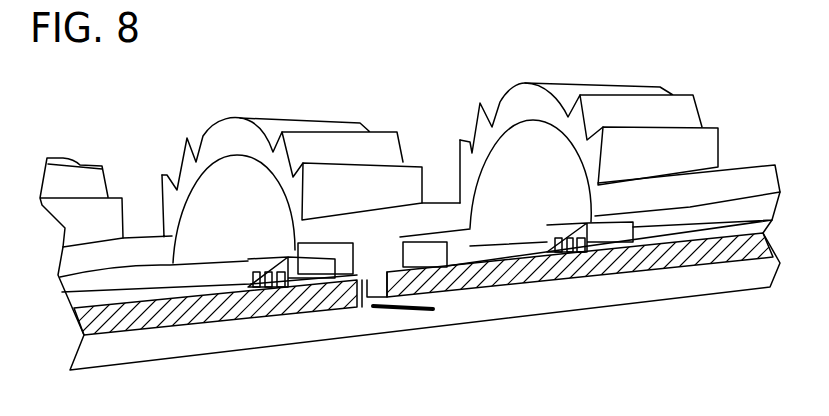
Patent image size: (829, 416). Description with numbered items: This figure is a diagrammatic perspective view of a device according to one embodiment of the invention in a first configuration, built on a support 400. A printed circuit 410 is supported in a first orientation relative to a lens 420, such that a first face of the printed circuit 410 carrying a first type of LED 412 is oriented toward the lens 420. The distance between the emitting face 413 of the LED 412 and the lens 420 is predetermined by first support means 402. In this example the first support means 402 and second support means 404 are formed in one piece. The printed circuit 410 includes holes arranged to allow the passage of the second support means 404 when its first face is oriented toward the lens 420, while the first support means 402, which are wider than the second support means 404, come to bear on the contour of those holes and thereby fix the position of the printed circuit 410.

The support 400 is at (450, 215).
The first support means 402 is at (377, 262).
The second support means 404 is at (375, 308).
The printed circuit 410 is at (273, 318).
The LED 412 is at (533, 250).
The emitting face 413 is at (557, 226).
The lens 420 is at (537, 118).